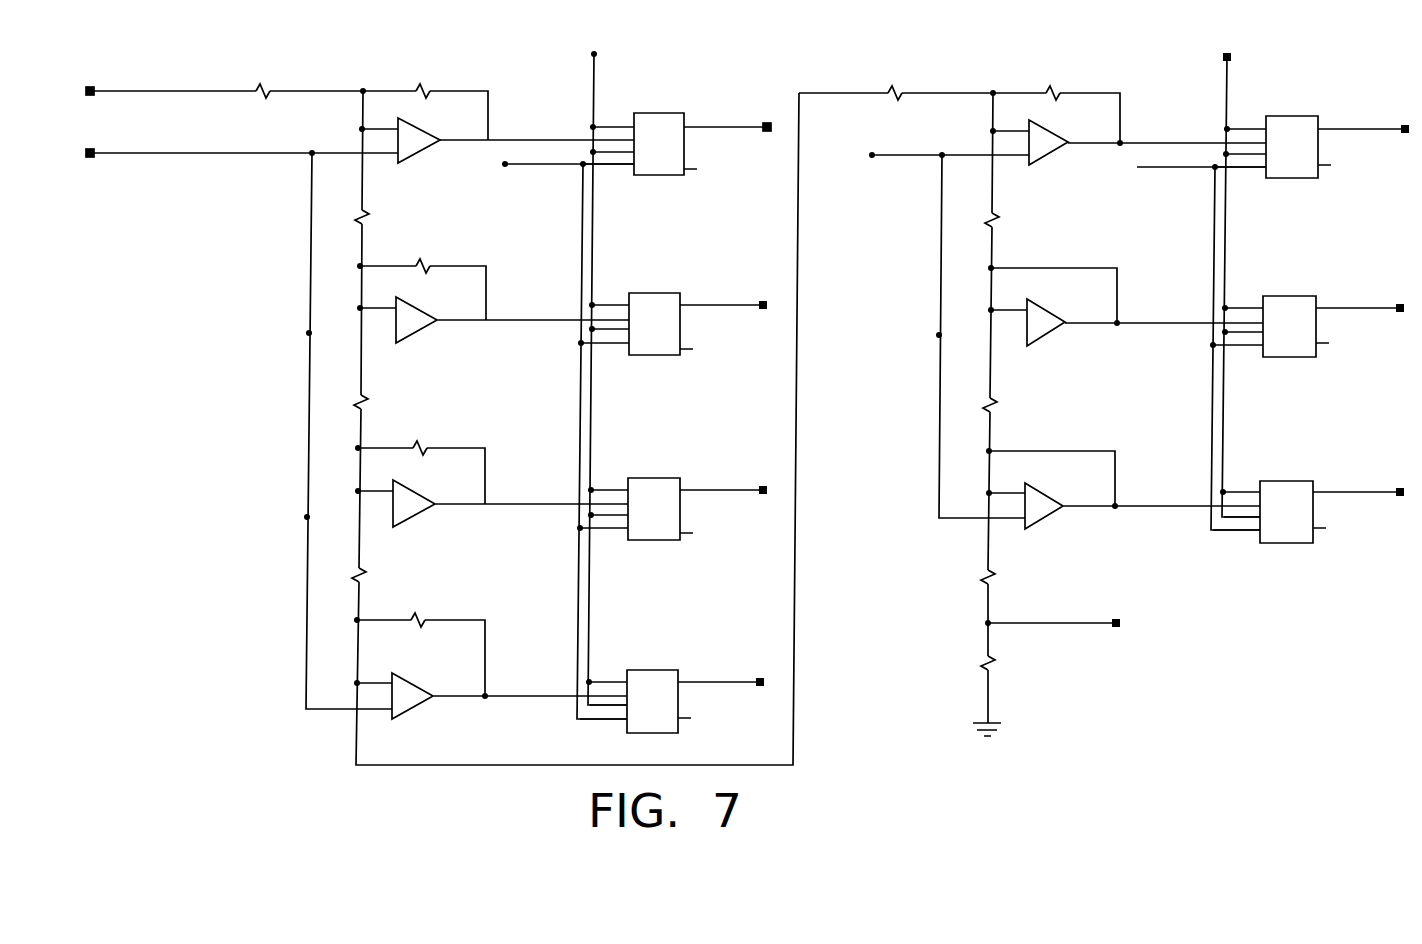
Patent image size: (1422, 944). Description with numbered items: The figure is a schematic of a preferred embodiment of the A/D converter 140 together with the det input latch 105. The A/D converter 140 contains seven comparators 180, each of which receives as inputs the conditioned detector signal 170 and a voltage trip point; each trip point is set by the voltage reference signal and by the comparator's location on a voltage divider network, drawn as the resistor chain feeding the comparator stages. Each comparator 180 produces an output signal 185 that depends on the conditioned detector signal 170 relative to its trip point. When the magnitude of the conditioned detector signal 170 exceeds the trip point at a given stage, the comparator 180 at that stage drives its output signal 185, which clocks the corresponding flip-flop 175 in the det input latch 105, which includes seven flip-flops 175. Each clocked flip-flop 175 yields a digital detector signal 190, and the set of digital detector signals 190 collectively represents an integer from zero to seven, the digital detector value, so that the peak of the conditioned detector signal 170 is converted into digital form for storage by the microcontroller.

The A/D converter 140 is at (392, 80).
The det input latch 105 is at (662, 91).
The conditioned detector signal 170 is at (212, 153).
The comparator 180 is at (417, 163).
The output signal 185 is at (555, 139).
The flip-flop 175 is at (647, 92).
The digital detector signal 190 is at (718, 127).